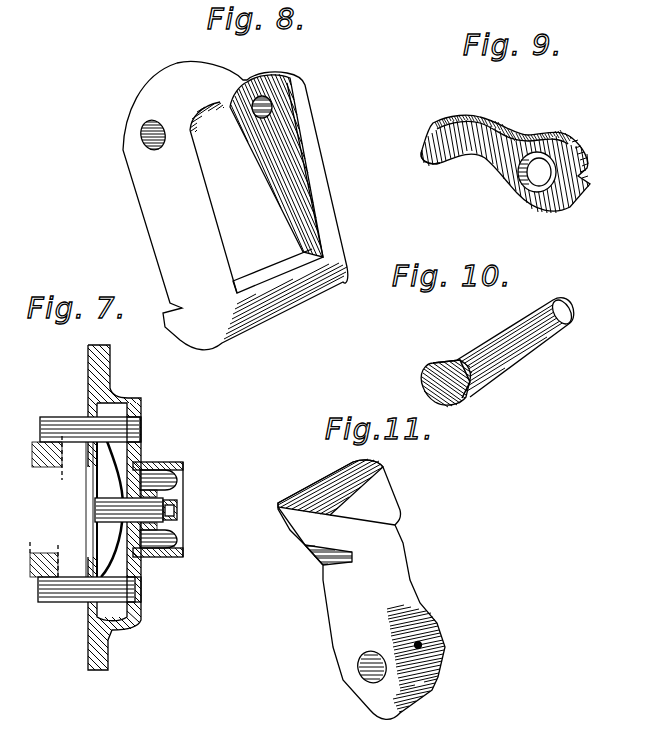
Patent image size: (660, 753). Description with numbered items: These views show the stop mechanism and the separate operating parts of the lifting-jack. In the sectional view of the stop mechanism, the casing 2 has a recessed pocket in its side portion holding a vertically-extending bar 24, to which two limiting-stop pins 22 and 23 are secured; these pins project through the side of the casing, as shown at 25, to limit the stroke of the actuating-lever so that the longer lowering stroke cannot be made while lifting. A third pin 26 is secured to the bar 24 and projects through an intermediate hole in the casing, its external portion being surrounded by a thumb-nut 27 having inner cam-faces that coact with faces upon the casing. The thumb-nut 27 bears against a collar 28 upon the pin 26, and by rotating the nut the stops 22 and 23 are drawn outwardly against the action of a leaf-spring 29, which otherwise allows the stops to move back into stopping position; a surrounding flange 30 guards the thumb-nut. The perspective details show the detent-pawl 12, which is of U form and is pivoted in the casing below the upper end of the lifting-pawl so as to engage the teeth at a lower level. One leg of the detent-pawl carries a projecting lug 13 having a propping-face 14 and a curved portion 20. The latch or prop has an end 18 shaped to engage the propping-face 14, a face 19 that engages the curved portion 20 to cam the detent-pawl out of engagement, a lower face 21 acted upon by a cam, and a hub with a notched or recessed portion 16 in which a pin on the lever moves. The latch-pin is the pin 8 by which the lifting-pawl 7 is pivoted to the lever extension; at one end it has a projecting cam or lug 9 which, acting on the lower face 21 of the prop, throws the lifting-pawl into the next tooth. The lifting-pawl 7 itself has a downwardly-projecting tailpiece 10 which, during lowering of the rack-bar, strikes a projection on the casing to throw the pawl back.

In FIG. 7, the casing 2 is at (108, 644).
In FIG. 11, the lifting-pawl 7 is at (361, 589).
In FIG. 10, the pin 8 is at (528, 352).
In FIG. 10, the cam or lug 9 is at (423, 381).
In FIG. 11, the tailpiece 10 is at (417, 703).
In FIG. 8, the detent-pawl 12 is at (273, 310).
In FIG. 8, the projecting lug 13 is at (235, 206).
In FIG. 8, the propping-face 14 is at (245, 82).
In FIG. 9, the notched or recessed portion 16 is at (583, 171).
In FIG. 9, the end of prop or latch 18 is at (435, 142).
In FIG. 9, the face of latch or prop 19 is at (468, 118).
In FIG. 8, the curved portion 20 is at (212, 112).
In FIG. 9, the lower face of prop 21 is at (433, 162).
In FIG. 7, the pin 22 is at (52, 417).
In FIG. 7, the pin 23 is at (47, 598).
In FIG. 7, the vertically-extending bar 24 is at (92, 524).
In FIG. 7, the projecting portions of pins 25 is at (131, 432).
In FIG. 7, the third pin 26 is at (129, 510).
In FIG. 7, the thumb-nut 27 is at (177, 482).
In FIG. 7, the collar 28 is at (167, 521).
In FIG. 7, the leaf-spring 29 is at (117, 463).
In FIG. 7, the flange 30 is at (202, 460).